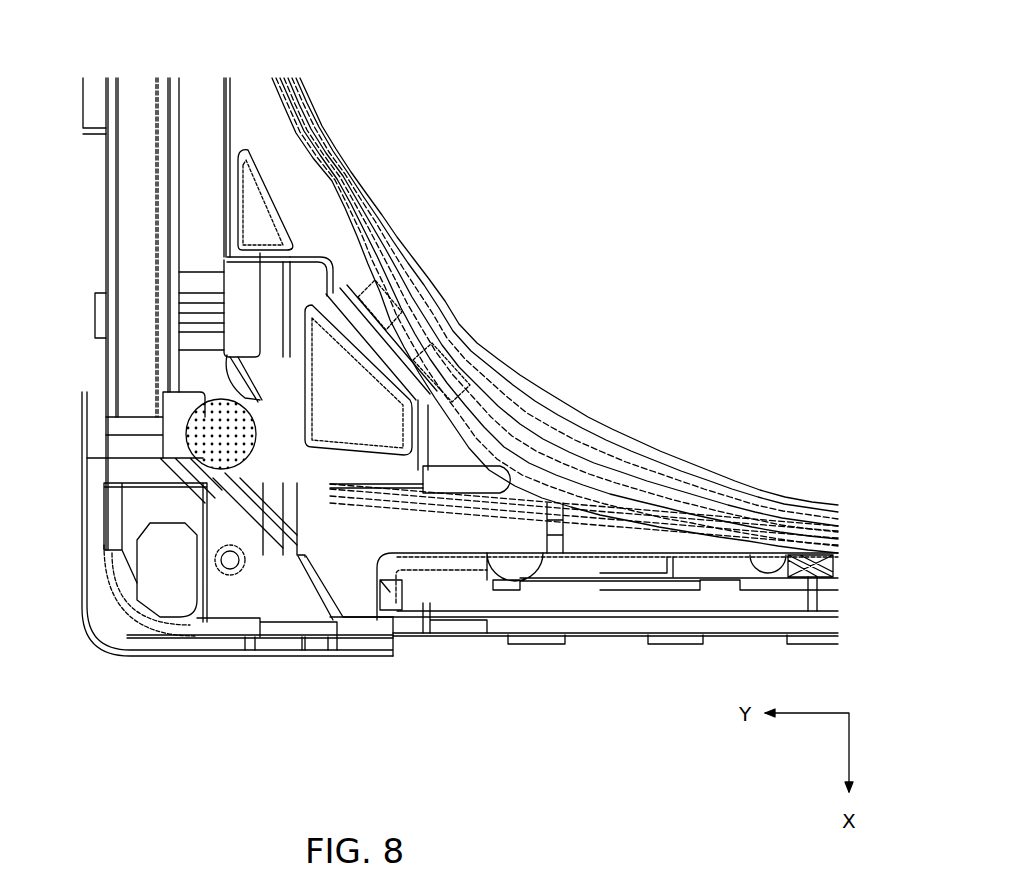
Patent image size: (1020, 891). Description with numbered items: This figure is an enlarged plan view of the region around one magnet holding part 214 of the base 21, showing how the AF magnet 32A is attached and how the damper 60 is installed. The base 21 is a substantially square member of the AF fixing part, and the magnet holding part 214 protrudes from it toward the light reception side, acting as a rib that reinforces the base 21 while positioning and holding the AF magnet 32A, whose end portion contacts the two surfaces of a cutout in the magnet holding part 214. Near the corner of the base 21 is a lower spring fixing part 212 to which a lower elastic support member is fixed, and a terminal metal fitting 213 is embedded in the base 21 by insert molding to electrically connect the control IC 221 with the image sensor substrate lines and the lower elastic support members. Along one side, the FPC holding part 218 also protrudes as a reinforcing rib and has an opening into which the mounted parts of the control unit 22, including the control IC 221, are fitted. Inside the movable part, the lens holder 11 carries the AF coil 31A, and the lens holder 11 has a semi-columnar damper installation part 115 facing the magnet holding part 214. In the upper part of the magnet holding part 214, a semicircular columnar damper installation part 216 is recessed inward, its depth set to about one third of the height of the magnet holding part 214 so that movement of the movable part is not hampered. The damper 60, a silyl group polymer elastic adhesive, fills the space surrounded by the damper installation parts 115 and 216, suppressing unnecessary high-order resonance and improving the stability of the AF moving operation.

The lens holder 11 is at (336, 187).
The AF coil 31A is at (208, 112).
The AF magnet 32A is at (122, 237).
The damper 60 is at (206, 430).
The damper installation part 115 is at (257, 437).
The base 21 is at (208, 650).
The lower spring fixing part 212 is at (283, 640).
The terminal metal fitting 213 is at (157, 575).
The magnet holding part 214 is at (122, 442).
The damper installation part 216 is at (203, 457).
The FPC holding part 218 is at (455, 590).
The control unit 22 is at (605, 620).
The control IC 221 is at (700, 583).